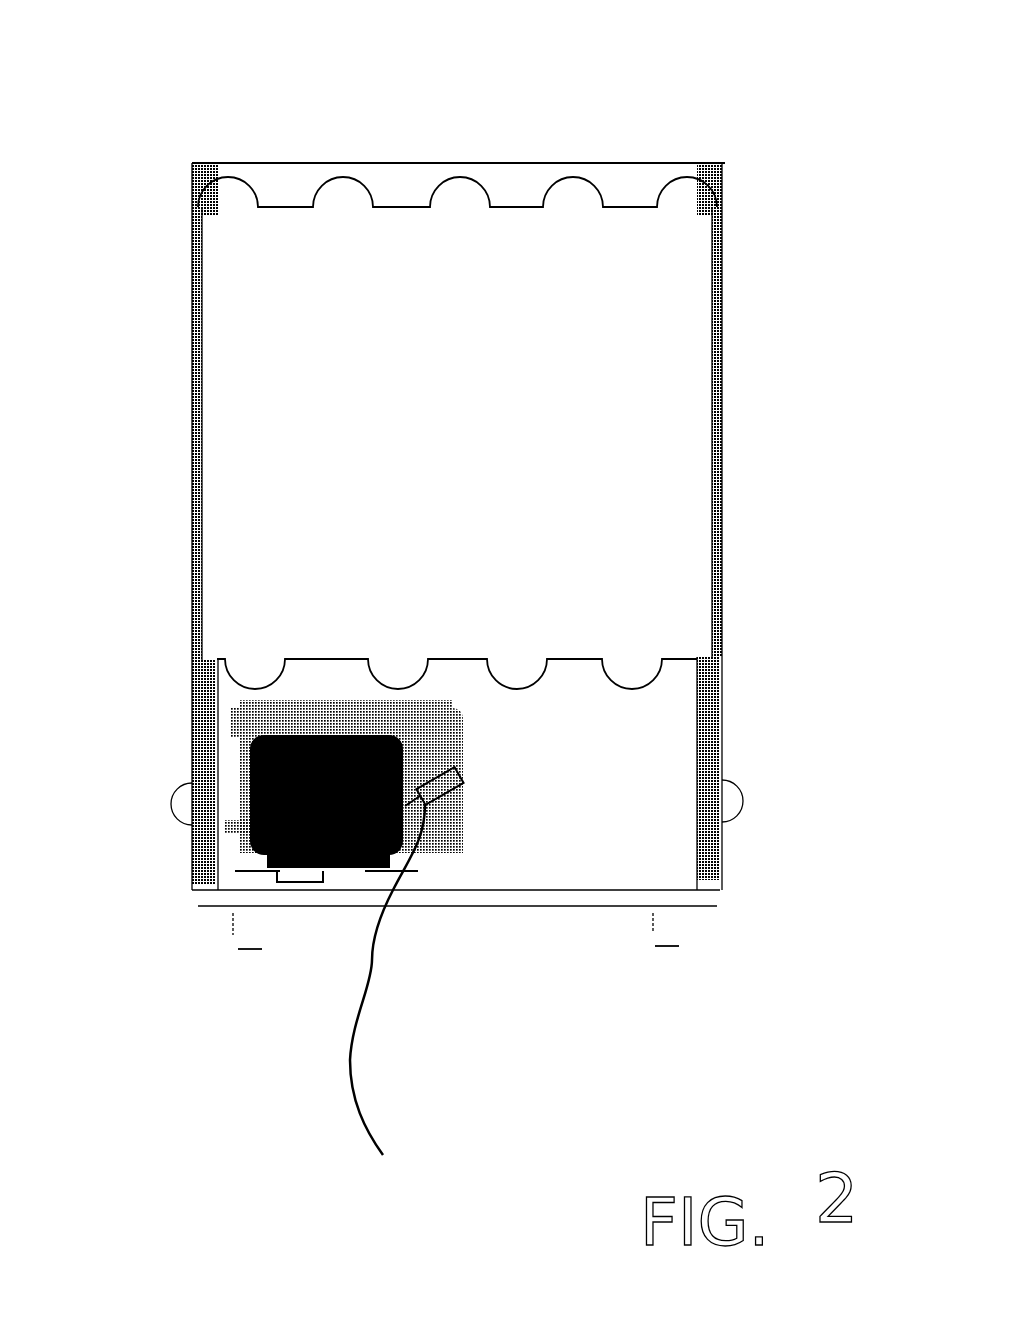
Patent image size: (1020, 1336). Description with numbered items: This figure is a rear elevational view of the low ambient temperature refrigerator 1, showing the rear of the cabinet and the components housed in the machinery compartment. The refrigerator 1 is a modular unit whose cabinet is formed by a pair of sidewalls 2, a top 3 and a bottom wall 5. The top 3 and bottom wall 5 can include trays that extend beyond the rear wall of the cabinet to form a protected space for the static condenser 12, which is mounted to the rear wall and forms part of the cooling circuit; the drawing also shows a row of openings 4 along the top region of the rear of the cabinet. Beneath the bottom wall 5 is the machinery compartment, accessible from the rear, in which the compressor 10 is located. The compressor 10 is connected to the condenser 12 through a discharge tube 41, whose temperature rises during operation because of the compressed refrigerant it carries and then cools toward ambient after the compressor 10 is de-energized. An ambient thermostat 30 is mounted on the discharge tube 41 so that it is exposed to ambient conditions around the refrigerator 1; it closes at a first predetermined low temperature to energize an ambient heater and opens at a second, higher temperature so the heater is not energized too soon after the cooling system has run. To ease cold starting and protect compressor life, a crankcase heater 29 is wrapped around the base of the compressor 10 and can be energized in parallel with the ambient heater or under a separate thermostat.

The refrigerator 1 is at (732, 270).
The sidewalls 2 is at (192, 493).
The top 3 is at (560, 163).
The slot 4 is at (290, 188).
The bottom wall 5 is at (470, 906).
The compressor 10 is at (330, 830).
The condenser 12 is at (640, 440).
The crankcase heater 29 is at (300, 878).
The ambient thermostat 30 is at (467, 768).
The discharge tube 41 is at (390, 1006).